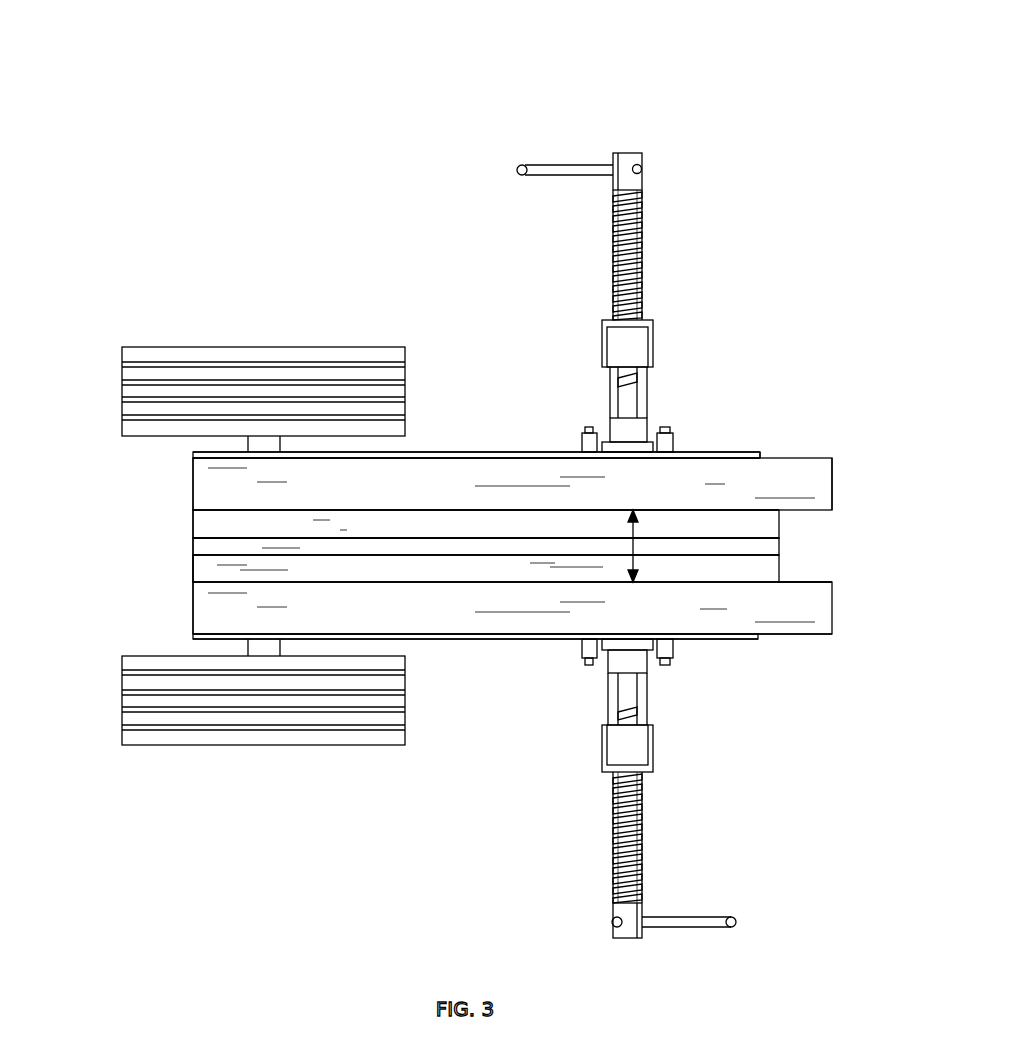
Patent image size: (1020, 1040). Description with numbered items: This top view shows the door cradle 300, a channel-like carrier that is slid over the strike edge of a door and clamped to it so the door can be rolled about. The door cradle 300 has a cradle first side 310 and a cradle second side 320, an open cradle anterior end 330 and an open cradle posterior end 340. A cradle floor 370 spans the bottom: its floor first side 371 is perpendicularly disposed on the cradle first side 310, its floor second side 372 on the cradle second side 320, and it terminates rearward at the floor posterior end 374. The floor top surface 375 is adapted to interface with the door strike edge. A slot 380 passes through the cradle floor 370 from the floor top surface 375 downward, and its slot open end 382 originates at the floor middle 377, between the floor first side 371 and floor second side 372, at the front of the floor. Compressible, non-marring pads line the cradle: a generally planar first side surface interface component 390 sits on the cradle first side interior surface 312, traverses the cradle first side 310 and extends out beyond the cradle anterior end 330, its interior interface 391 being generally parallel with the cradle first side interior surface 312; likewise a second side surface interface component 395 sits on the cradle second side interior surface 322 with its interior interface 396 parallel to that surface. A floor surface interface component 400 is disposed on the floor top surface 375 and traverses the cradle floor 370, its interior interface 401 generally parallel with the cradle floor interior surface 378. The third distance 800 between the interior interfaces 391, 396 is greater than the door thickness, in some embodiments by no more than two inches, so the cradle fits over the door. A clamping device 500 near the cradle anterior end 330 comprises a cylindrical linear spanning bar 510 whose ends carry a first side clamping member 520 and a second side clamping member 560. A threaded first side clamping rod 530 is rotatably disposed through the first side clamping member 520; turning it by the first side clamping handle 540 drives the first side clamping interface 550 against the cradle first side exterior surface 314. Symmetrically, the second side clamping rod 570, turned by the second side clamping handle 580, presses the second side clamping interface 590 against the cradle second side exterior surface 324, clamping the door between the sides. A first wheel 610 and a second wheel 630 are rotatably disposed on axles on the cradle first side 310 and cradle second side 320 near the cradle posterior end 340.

The door cradle 300 is at (422, 328).
The cradle first side 310 is at (547, 637).
The cradle first side interior surface 312 is at (753, 635).
The cradle first side exterior surface 314 is at (738, 638).
The cradle second side 320 is at (703, 450).
The cradle second side interior surface 322 is at (760, 455).
The cradle second side exterior surface 324 is at (740, 448).
The cradle anterior end 330 is at (758, 637).
The cradle posterior end 340 is at (190, 493).
The cradle floor 370 is at (328, 547).
The floor first side 371 is at (190, 597).
The floor second side 372 is at (190, 474).
The floor posterior end 374 is at (190, 618).
The floor top surface 375 is at (317, 547).
The floor middle 377 is at (205, 547).
The cradle floor interior surface 378 is at (223, 548).
The slot 380 is at (515, 545).
The slot open end 382 is at (620, 432).
The first side surface interface component 390 is at (455, 617).
The first side surface interface component interior interface 391 is at (817, 580).
The second side surface interface component 395 is at (383, 490).
The second side surface interface component interior interface 396 is at (252, 510).
The floor surface interface component 400 is at (214, 570).
The floor surface interface component interior interface 401 is at (252, 520).
The clamping device 500 is at (661, 134).
The spanning bar 510 is at (613, 688).
The first side clamping member 520 is at (613, 748).
The first side clamping rod 530 is at (630, 817).
The first side clamping handle 540 is at (698, 923).
The first side clamping interface 550 is at (628, 657).
The second side clamping member 560 is at (627, 337).
The second side clamping rod 570 is at (627, 238).
The second side clamping handle 580 is at (558, 170).
The second side clamping interface 590 is at (773, 547).
The first wheel 610 is at (157, 695).
The second wheel 630 is at (213, 367).
The third distance 800 is at (633, 547).